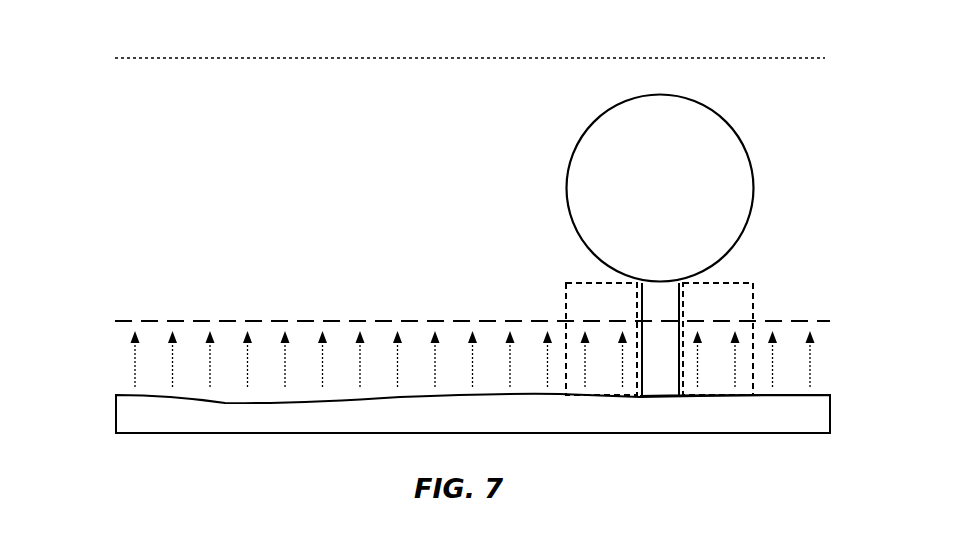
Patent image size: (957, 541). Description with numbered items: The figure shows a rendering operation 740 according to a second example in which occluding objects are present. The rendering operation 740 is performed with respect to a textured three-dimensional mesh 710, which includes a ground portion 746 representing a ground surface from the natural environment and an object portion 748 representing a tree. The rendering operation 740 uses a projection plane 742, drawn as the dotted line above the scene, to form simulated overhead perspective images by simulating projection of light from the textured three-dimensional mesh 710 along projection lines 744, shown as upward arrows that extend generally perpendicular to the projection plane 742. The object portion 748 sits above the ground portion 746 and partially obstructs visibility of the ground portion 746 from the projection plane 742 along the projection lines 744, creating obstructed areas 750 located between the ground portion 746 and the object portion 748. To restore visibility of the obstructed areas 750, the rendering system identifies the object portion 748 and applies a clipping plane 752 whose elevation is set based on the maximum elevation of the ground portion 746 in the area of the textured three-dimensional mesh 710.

The rendering operation 740 is at (83, 126).
The projection plane 742 is at (824, 58).
The projection lines 744 is at (115, 330).
The ground portion 746 is at (812, 414).
The object portion 748 is at (752, 179).
The obstructed areas 750 is at (565, 290).
The clipping plane 752 is at (177, 320).
The textured three-dimensional mesh 710 is at (106, 417).